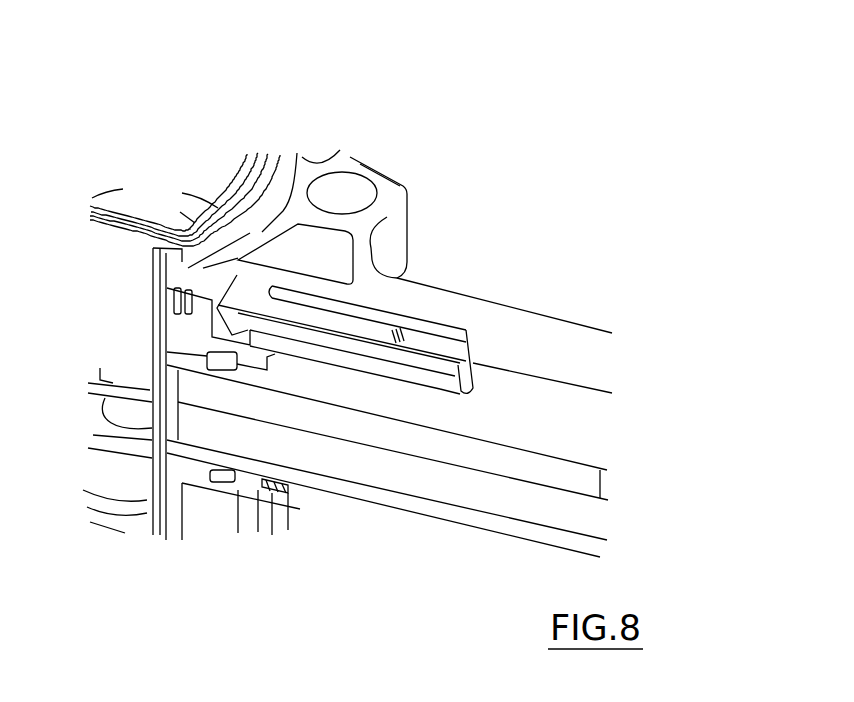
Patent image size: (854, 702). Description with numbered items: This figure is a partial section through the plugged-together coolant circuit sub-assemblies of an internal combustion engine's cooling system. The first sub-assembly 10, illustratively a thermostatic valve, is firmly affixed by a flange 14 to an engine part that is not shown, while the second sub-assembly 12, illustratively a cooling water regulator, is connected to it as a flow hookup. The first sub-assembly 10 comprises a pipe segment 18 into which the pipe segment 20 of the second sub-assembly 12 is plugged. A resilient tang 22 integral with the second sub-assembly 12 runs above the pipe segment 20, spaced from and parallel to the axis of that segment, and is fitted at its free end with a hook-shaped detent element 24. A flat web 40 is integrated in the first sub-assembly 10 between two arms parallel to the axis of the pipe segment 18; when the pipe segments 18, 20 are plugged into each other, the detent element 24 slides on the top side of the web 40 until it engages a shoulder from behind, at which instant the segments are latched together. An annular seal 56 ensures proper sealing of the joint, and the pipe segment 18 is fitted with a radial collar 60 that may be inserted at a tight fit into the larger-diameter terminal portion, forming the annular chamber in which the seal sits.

The first sub-assembly 10 is at (424, 228).
The second sub-assembly 12 is at (591, 320).
The flange 14 is at (344, 155).
The pipe segment 18 is at (238, 500).
The pipe segment 20 is at (418, 507).
The resilient tang 22 is at (423, 292).
The hook-shaped detent element 24 is at (272, 264).
The flat web 40 is at (467, 392).
The annular seal 56 is at (222, 492).
The radial collar 60 is at (273, 494).